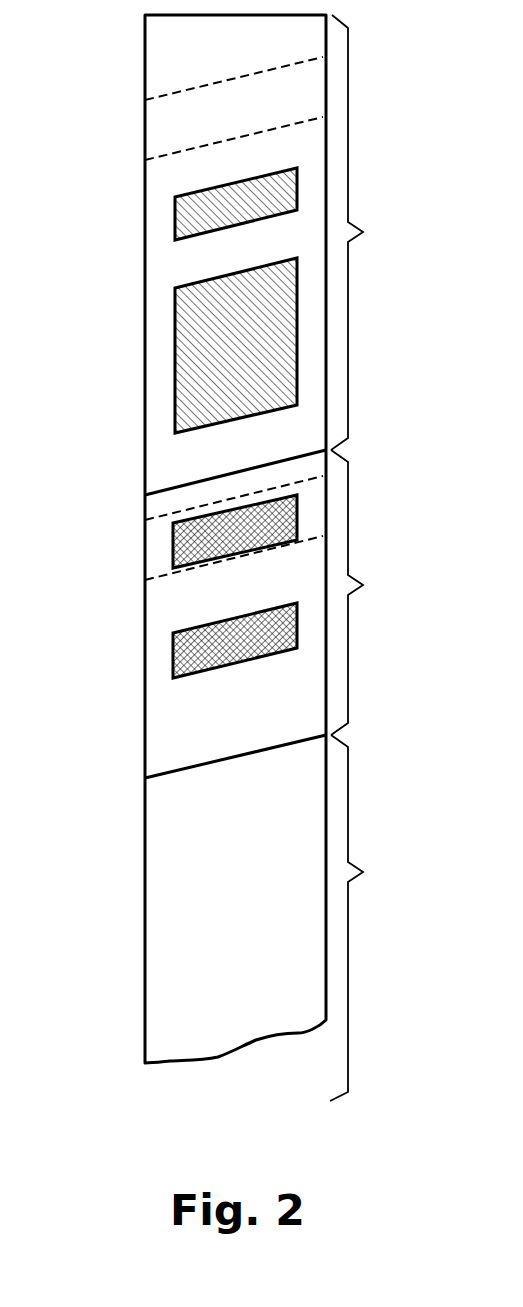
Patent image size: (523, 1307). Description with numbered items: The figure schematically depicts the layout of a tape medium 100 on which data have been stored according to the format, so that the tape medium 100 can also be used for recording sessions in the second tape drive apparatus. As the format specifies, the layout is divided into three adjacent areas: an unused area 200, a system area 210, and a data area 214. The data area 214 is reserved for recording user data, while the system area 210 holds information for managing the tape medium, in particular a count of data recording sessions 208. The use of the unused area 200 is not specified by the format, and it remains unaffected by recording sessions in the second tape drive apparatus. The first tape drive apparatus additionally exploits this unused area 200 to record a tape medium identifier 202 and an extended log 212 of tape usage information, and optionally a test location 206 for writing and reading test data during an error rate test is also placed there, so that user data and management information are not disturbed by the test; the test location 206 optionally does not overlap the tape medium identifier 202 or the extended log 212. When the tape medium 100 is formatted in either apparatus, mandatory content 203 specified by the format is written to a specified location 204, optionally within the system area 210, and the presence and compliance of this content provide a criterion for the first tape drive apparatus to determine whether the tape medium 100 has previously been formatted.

The tape medium 100 is at (145, 925).
The unused area 200 is at (369, 232).
The tape medium identifier 202 is at (175, 233).
The mandatory content 203 is at (173, 557).
The specified location 204 is at (190, 530).
The test location 206 is at (190, 109).
The count of data recording sessions 208 is at (173, 660).
The system area 210 is at (276, 592).
The extended log 212 is at (175, 370).
The data area 214 is at (276, 918).